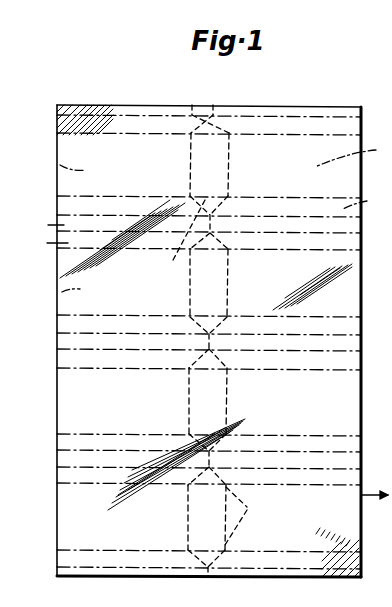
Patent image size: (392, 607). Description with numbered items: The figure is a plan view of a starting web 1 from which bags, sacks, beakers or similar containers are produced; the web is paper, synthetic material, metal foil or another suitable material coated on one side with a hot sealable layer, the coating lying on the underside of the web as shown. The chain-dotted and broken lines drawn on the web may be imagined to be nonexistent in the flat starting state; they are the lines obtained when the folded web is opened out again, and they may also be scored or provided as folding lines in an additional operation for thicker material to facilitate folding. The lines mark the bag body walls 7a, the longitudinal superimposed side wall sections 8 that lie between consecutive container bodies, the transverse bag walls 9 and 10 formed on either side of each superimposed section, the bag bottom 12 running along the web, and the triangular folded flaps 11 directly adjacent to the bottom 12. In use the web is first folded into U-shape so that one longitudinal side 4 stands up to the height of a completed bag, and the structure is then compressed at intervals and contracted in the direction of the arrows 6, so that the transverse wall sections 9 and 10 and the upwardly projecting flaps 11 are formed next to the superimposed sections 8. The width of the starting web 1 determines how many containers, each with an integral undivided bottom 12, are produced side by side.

The starting web 1 is at (342, 295).
The longitudinal side 4 is at (391, 587).
The arrows 6 is at (388, 548).
The bag body walls 7a is at (57, 160).
The longitudinal superimposed side wall sections 8 is at (248, 112).
The transverse wall section 9 is at (128, 122).
The transverse wall section 10 is at (305, 125).
The triangular folded flaps 11 is at (200, 118).
The bottom 12 is at (214, 171).